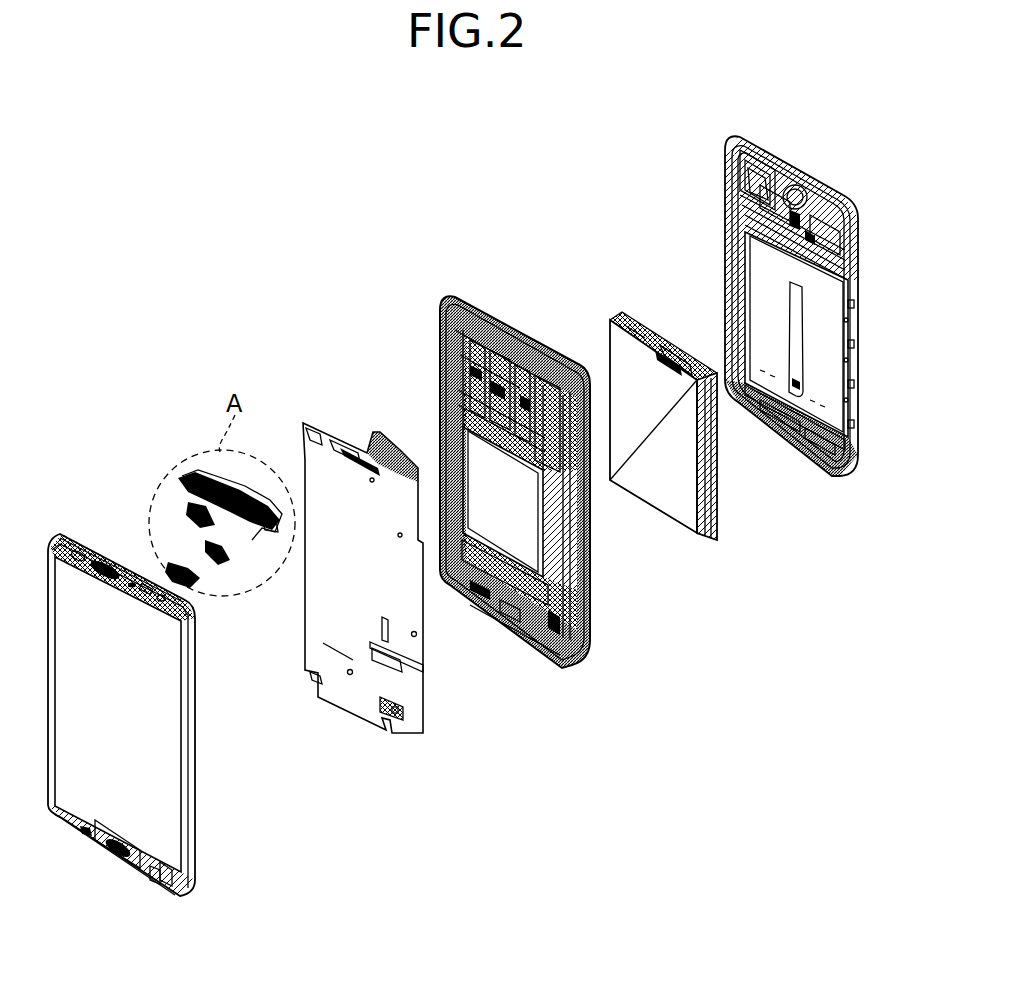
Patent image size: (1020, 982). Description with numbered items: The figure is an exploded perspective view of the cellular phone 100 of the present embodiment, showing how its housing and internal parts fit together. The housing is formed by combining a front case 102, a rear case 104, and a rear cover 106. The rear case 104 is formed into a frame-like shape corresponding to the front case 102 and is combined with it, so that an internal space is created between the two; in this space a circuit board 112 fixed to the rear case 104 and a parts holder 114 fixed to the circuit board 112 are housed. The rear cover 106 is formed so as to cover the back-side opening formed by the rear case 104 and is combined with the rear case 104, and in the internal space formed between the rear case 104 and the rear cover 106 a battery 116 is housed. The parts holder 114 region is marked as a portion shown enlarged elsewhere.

The cellular phone 100 is at (303, 290).
The front case 102 is at (150, 890).
The rear case 104 is at (542, 666).
The rear cover 106 is at (826, 472).
The circuit board 112 is at (405, 723).
The parts holder 114 is at (266, 542).
The battery 116 is at (682, 525).